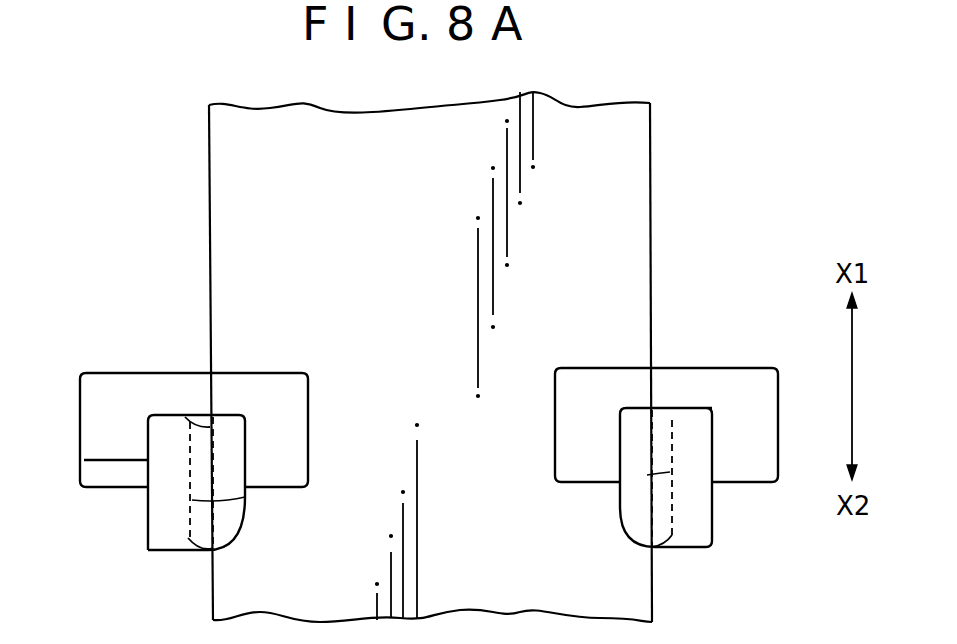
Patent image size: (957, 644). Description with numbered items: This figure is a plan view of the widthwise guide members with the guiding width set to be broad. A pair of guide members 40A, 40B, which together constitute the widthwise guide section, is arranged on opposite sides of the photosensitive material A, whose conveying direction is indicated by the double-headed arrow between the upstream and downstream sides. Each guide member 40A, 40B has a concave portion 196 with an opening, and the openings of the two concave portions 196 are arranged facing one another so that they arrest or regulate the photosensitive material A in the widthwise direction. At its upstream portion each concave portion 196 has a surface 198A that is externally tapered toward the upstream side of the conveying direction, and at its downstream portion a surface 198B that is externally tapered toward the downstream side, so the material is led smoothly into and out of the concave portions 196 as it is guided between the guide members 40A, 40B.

The plate A is at (633, 200).
The guide member 40A is at (138, 500).
The guide member 40B is at (717, 513).
The concave portion 196 is at (245, 497).
The surface 198A is at (213, 395).
The surface 198B is at (210, 548).